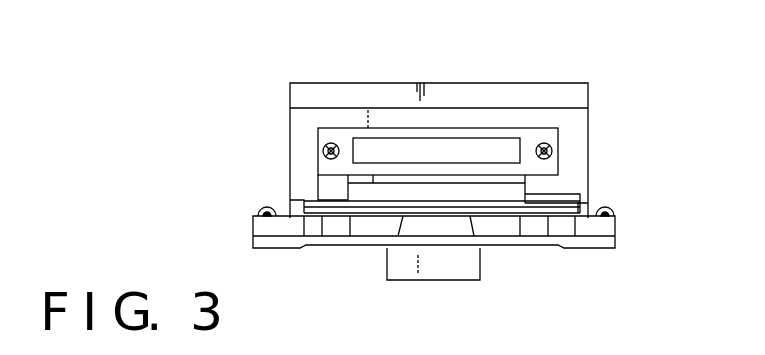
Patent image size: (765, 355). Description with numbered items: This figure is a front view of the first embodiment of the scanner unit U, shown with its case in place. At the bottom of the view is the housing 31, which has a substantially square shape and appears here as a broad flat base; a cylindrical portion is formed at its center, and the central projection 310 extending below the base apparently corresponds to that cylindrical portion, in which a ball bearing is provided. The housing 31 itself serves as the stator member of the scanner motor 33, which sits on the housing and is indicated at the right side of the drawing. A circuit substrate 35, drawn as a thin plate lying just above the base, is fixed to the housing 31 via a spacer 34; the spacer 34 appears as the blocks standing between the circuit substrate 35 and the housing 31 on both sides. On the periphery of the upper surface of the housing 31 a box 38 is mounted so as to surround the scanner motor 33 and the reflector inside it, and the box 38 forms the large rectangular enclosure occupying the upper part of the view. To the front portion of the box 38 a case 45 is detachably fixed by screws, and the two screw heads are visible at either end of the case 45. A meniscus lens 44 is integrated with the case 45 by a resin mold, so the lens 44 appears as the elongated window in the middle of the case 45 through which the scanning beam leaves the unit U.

The lens unit U is at (559, 70).
The box 38 is at (577, 138).
The case 45 is at (352, 132).
The meniscus lens 44 is at (467, 148).
The scanner motor 33 is at (525, 195).
The circuit substrate 35 is at (317, 205).
The spacer 34 is at (340, 224).
The housing 31 is at (585, 248).
The cylindrical portion 310 is at (450, 265).